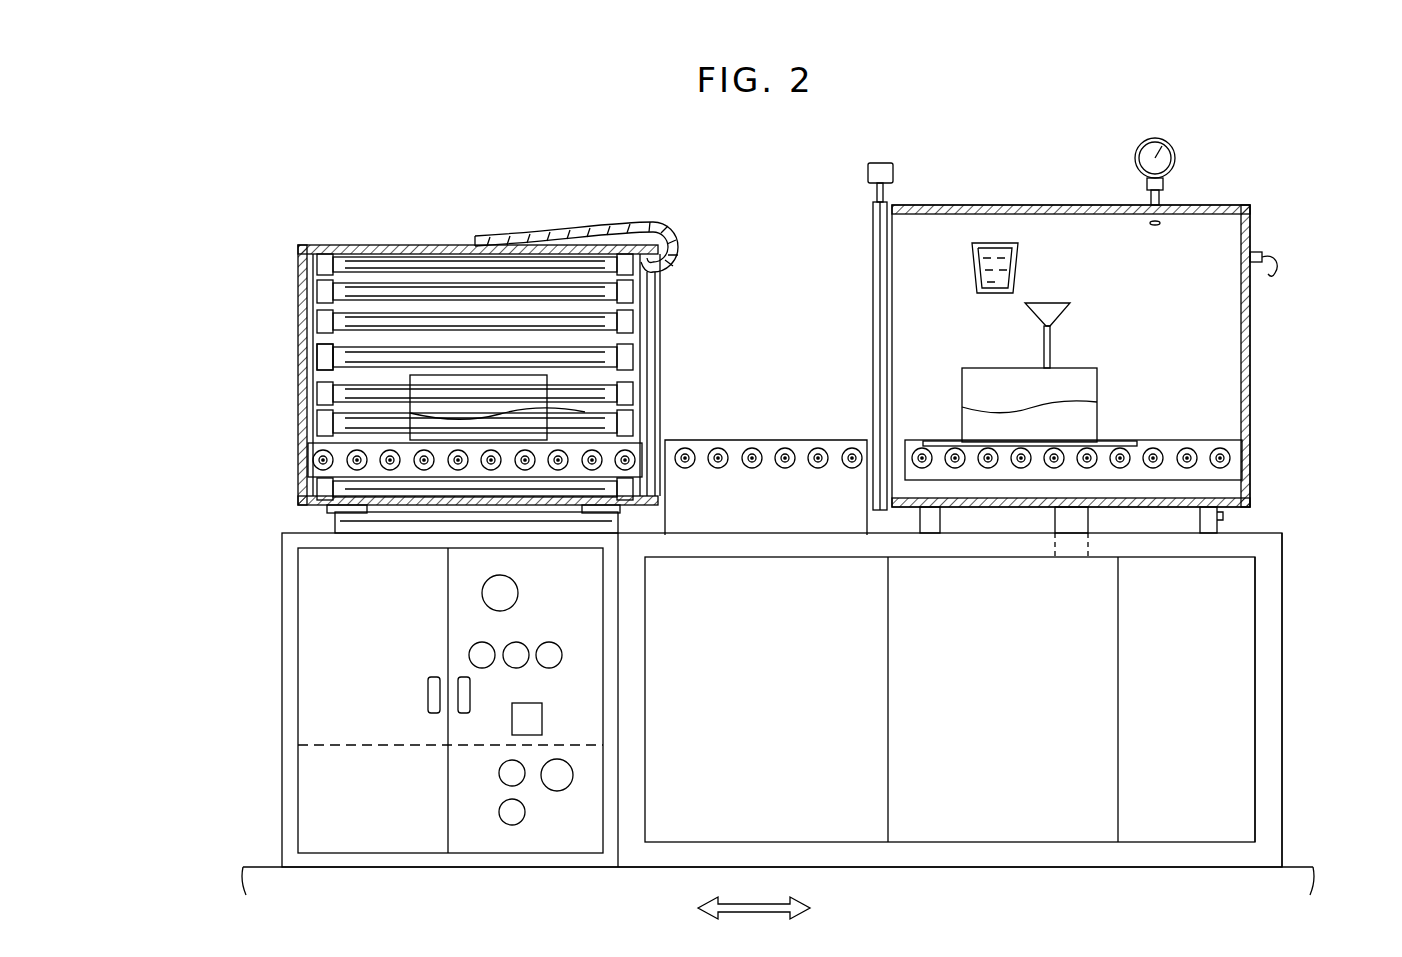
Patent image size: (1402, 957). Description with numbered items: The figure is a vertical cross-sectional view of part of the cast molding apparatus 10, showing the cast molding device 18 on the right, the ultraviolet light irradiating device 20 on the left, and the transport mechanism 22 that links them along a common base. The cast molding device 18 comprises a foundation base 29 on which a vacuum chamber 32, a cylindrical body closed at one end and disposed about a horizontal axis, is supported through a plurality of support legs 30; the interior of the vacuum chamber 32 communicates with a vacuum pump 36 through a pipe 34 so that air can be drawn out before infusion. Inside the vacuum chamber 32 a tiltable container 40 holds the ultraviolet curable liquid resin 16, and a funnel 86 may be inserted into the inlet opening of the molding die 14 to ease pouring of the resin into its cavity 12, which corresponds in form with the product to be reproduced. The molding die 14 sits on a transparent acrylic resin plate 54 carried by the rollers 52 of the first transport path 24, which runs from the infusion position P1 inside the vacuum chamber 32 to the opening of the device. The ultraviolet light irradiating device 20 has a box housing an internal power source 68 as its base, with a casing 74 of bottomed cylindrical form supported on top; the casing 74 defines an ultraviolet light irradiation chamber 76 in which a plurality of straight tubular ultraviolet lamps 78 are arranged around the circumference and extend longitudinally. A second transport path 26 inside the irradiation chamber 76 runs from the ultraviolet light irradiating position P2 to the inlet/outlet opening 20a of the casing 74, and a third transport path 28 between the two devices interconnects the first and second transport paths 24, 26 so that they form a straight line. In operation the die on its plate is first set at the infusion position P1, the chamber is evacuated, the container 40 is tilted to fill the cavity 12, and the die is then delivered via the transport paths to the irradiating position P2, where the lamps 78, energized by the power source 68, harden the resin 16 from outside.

The cast molding apparatus 10 is at (1056, 91).
The cavity 12 is at (1088, 386).
The molding die 14 is at (548, 378).
The ultraviolet curable liquid resin 16 is at (975, 268).
The cast molding device 18 is at (1247, 153).
The ultraviolet light irradiating device 20 is at (285, 175).
The inlet/outlet opening 20a is at (650, 325).
The transport mechanism 22 is at (805, 496).
The first transport path 24 is at (1001, 487).
The second transport path 26 is at (535, 478).
The third transport path 28 is at (776, 434).
The foundation base 29 is at (1276, 665).
The support legs 30 is at (1245, 522).
The vacuum chamber 32 is at (1252, 350).
The pipe 34 is at (1088, 522).
The vacuum pump 36 is at (1108, 668).
The container 40 is at (993, 294).
The rollers 52 is at (1253, 463).
The transparent acrylic resin plate 54 is at (582, 415).
The power source 68 is at (312, 698).
The casing 74 is at (453, 236).
The ultraviolet light irradiation chamber 76 is at (343, 380).
The ultraviolet lamps 78 is at (413, 265).
The funnel 86 is at (1060, 306).
The infusion position P1 is at (1120, 301).
The ultraviolet light irradiating position P2 is at (396, 372).